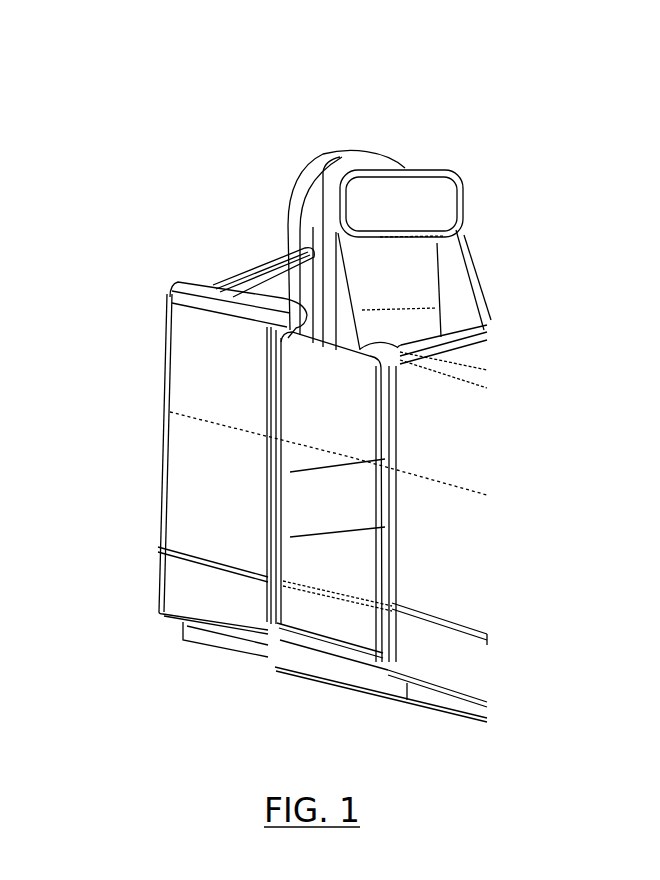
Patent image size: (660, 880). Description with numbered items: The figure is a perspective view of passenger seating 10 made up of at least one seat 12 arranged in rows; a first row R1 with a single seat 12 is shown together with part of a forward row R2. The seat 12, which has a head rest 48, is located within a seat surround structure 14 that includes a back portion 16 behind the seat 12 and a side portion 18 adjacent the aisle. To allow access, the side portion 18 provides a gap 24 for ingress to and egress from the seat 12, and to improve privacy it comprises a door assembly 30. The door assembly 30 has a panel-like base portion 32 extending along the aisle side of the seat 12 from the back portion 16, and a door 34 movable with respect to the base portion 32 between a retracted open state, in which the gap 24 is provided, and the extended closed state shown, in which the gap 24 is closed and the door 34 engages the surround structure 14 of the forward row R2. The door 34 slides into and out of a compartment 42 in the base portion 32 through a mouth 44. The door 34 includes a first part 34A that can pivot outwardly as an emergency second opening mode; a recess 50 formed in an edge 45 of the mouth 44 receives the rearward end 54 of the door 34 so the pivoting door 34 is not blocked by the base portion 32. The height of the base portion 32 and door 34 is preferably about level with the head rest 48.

The seating 10 is at (606, 83).
The seat 12 is at (389, 235).
The seat surround structure 14 is at (246, 254).
The back portion 16 is at (281, 251).
The side portion 18 is at (167, 327).
The gap 24 is at (326, 656).
The door assembly 30 is at (150, 549).
The base portion 32 is at (180, 490).
The door 34 is at (357, 420).
The first part of the door 34A is at (357, 626).
The compartment 42 is at (250, 273).
The mouth 44 is at (282, 625).
The edge of the mouth 45 is at (264, 594).
The head rest 48 is at (447, 212).
The recess 50 is at (396, 458).
The rearward end 54 is at (396, 527).
The first row R1 is at (152, 377).
The forward row R2 is at (450, 717).